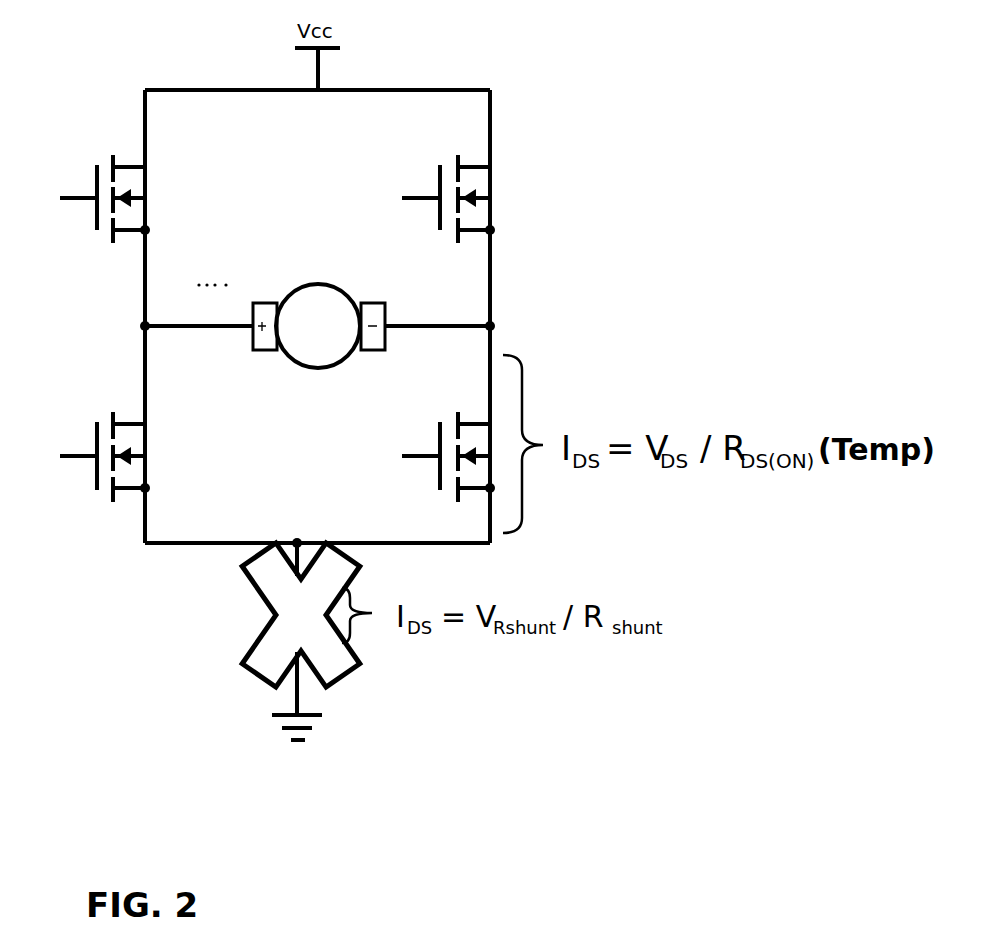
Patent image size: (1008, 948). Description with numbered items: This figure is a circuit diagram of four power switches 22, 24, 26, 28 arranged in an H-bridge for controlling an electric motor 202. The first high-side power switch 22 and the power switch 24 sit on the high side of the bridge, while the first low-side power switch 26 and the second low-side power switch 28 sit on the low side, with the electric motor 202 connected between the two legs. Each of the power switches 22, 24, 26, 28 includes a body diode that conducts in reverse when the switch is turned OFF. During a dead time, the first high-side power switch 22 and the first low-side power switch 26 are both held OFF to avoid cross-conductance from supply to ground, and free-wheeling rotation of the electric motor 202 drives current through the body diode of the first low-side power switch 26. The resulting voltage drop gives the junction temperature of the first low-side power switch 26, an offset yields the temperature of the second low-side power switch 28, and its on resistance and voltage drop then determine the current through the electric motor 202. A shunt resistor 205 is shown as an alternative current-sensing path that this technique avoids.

The first high-side power switch 22 is at (97, 228).
The power switch 24 is at (440, 218).
The first low-side power switch 26 is at (115, 502).
The second low-side power switch 28 is at (438, 473).
The electric motor 202 is at (316, 370).
The shunt resistor 205 is at (230, 636).